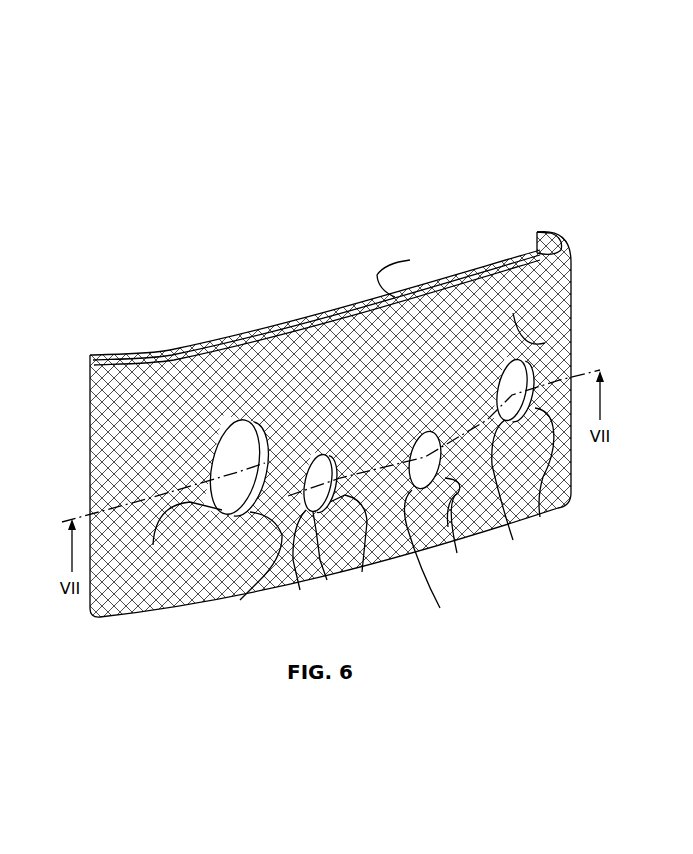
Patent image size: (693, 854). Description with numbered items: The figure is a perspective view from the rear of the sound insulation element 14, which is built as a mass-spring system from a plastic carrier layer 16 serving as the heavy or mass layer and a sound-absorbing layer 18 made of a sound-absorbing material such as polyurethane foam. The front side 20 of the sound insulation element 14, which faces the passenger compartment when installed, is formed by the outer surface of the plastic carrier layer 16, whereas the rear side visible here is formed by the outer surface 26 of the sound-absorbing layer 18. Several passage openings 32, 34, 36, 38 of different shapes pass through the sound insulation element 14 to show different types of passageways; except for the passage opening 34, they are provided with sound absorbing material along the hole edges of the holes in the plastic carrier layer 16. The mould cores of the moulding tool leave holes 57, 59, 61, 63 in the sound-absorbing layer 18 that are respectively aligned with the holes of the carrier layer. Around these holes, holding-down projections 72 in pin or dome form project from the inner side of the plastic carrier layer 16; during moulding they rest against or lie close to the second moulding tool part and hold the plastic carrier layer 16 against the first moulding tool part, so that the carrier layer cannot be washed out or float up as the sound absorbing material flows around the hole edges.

The sound insulation element 14 is at (163, 312).
The plastic carrier layer 16 is at (410, 260).
The sound-absorbing layer 18 is at (515, 262).
The front side 20 is at (469, 254).
The outer surface of the sound-absorbing layer 26 is at (545, 343).
The passage opening 32 is at (522, 374).
The passage opening 34 is at (428, 528).
The passage opening 36 is at (300, 590).
The passage opening 38 is at (153, 545).
The hole 57 is at (540, 517).
The hole 59 is at (457, 538).
The hole 61 is at (362, 572).
The hole 63 is at (240, 600).
The holding-down projection 72 is at (327, 580).